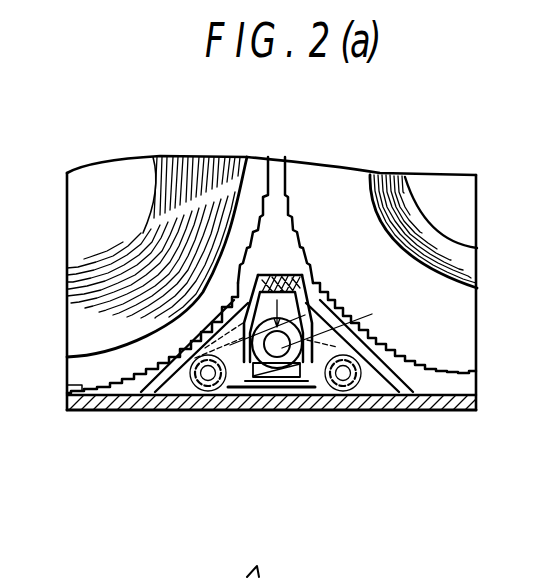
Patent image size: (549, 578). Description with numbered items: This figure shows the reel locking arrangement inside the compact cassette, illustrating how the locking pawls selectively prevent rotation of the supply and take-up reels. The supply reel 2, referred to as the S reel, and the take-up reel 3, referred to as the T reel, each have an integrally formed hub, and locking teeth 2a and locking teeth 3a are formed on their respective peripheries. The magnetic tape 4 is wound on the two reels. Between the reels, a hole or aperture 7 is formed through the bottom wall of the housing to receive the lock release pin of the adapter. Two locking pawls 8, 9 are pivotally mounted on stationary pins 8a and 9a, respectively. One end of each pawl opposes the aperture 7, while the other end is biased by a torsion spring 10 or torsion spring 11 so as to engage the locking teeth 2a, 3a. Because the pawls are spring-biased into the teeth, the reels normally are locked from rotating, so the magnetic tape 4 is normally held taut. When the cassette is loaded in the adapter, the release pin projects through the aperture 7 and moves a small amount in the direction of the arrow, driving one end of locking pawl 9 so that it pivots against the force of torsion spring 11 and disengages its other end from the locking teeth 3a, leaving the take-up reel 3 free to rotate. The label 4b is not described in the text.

The supply reel 2 is at (90, 370).
The locking teeth 2a is at (123, 383).
The take-up reel 3 is at (436, 386).
The locking teeth 3a is at (420, 386).
The magnetic tape 4 is at (250, 166).
The stepped groove walls 4b is at (352, 322).
The aperture 7 is at (313, 300).
The locking pawl 8 is at (220, 392).
The stationary pin 8a is at (207, 381).
The locking pawl 9 is at (313, 392).
The stationary pin 9a is at (344, 381).
The torsion spring 10 is at (254, 380).
The torsion spring 11 is at (284, 389).